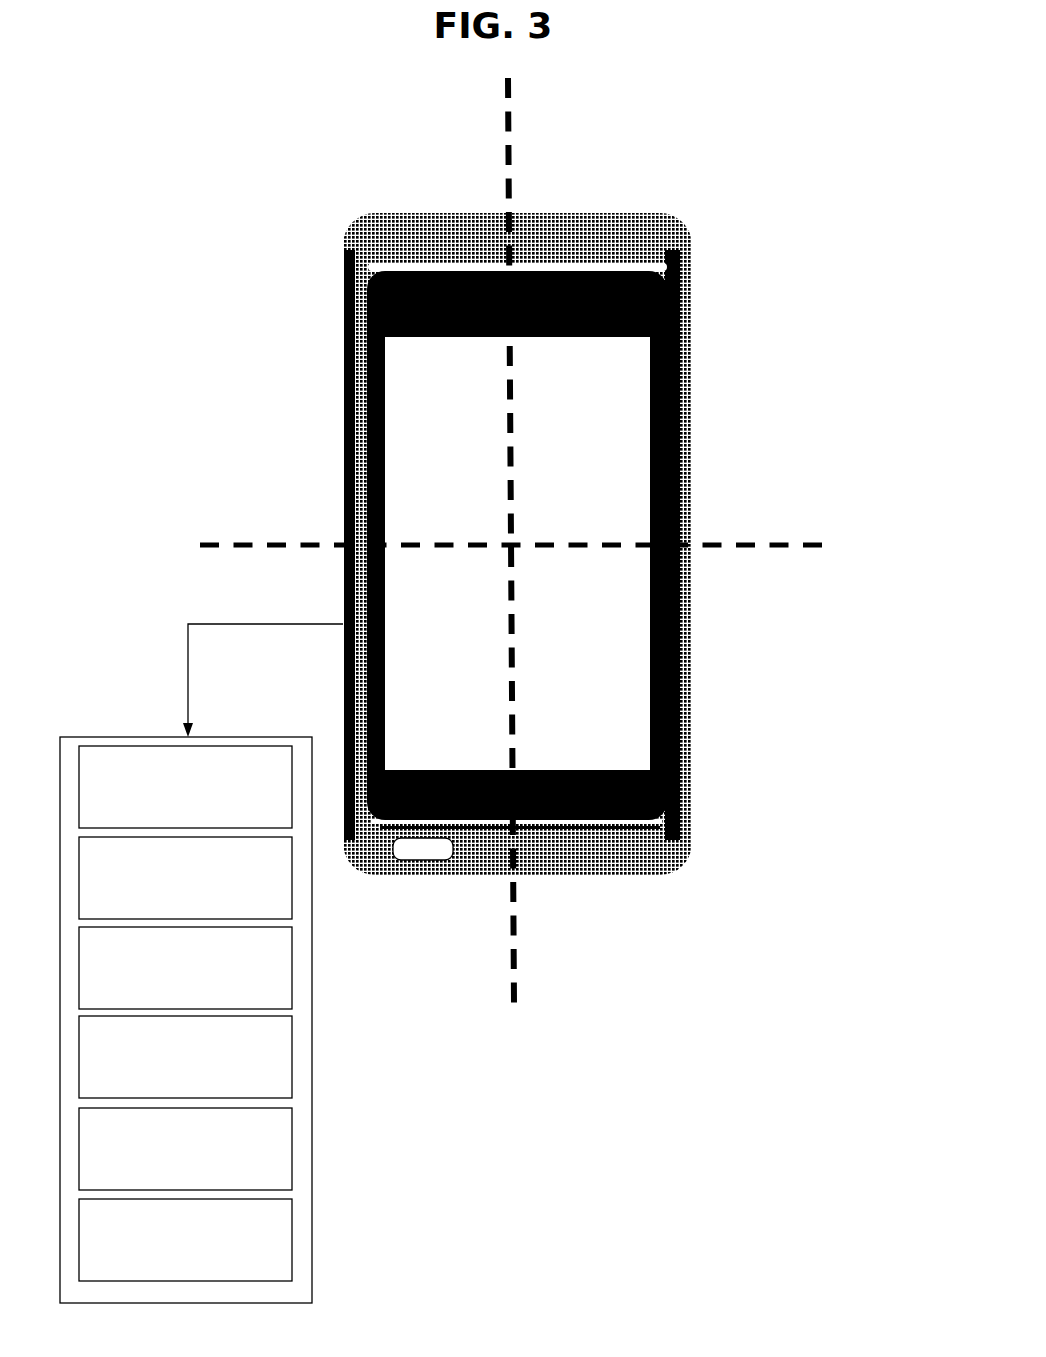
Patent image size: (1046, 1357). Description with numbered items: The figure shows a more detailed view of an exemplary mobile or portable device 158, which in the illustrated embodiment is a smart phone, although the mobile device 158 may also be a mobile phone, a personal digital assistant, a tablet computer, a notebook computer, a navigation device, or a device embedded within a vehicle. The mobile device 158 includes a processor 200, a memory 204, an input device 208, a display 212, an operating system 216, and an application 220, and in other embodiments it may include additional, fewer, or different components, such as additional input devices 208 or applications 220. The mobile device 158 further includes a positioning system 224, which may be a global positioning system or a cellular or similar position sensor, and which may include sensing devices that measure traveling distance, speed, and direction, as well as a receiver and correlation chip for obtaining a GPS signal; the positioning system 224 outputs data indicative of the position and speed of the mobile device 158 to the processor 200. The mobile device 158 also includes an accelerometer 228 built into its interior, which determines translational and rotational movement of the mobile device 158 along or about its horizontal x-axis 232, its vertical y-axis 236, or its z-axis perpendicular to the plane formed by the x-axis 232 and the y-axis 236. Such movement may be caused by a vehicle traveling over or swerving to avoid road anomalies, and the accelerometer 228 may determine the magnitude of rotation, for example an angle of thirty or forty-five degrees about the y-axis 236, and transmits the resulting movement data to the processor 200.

The mobile device 158 is at (733, 202).
The processor 200 is at (166, 805).
The memory 204 is at (166, 896).
The input device 208 is at (572, 707).
The display 212 is at (428, 481).
The operating system 216 is at (166, 986).
The application 220 is at (166, 1075).
The positioning system 224 is at (166, 1167).
The accelerometer 228 is at (166, 1258).
The x-axis 232 is at (814, 566).
The y-axis 236 is at (526, 998).